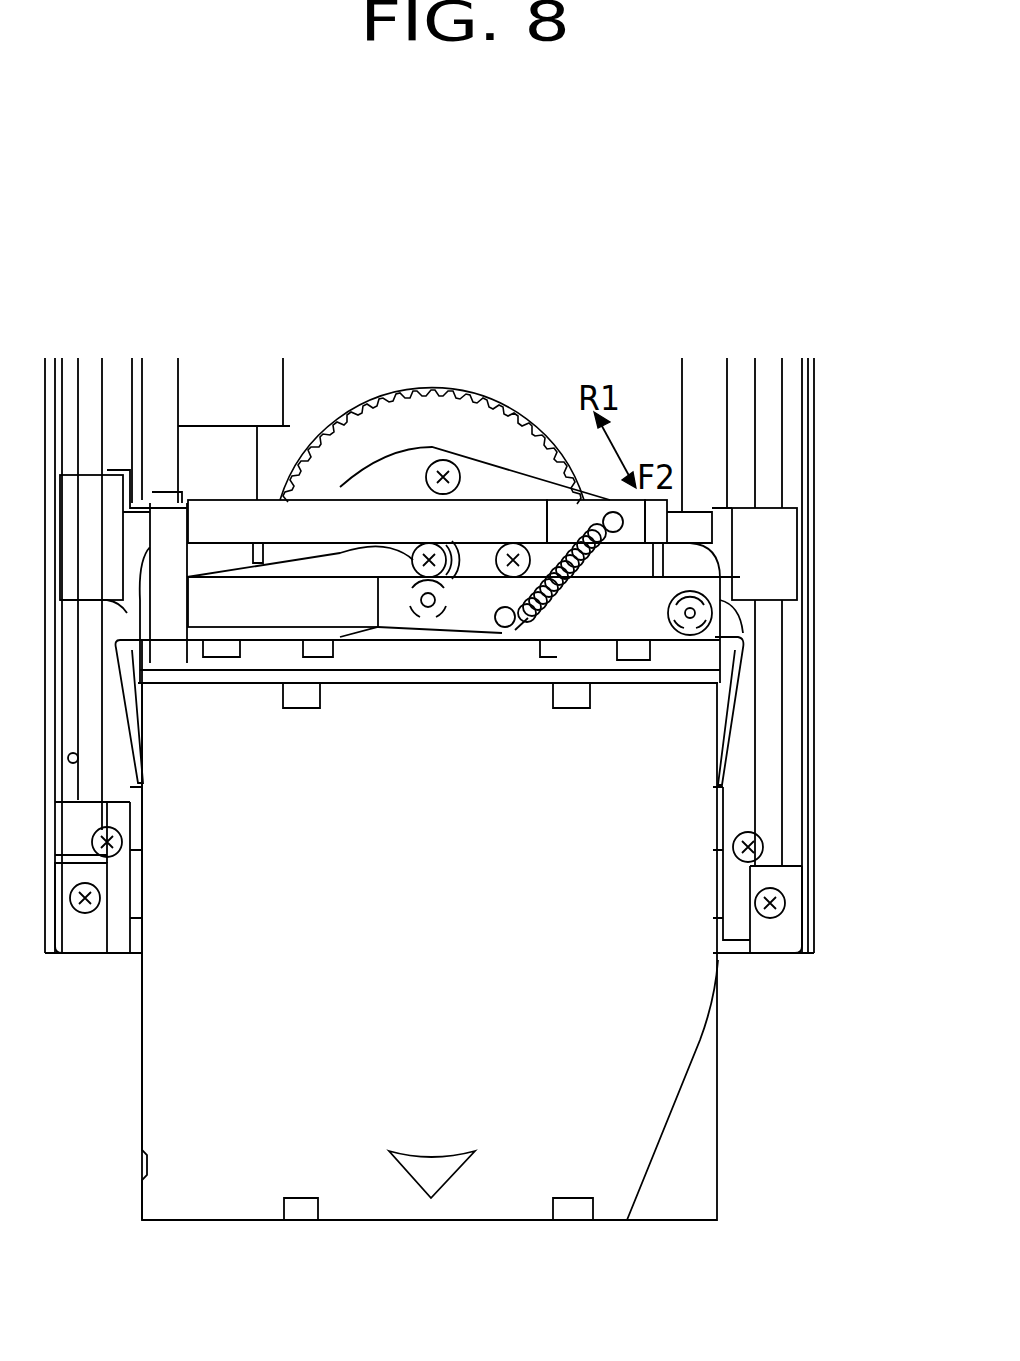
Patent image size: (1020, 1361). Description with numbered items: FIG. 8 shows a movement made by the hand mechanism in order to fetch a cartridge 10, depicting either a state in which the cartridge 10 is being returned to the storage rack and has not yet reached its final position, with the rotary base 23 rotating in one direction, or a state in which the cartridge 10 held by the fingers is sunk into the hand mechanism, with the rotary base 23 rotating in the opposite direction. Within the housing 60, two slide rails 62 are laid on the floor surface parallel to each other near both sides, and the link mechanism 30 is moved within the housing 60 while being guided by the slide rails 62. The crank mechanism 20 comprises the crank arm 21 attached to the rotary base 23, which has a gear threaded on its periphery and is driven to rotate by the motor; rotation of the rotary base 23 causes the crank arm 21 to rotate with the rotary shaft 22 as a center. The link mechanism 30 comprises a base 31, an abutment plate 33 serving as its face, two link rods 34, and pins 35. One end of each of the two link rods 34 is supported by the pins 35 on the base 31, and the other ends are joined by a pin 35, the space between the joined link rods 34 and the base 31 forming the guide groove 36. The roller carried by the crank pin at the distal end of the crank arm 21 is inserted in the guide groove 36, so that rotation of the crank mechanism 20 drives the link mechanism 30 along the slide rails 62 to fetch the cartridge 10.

The cartridge 10 is at (508, 1185).
The crank mechanism 20 is at (553, 292).
The crank arm 21 is at (540, 493).
The rotary shaft 22 is at (428, 543).
The rotary base 23 is at (433, 417).
The link mechanism 30 is at (513, 755).
The base 31 is at (247, 520).
The abutment plate 33 is at (395, 680).
The link rods 34 is at (275, 622).
The pins 35 is at (428, 607).
The guide groove 36 is at (630, 558).
The housing 60 is at (807, 722).
The slide rails 62 is at (772, 432).